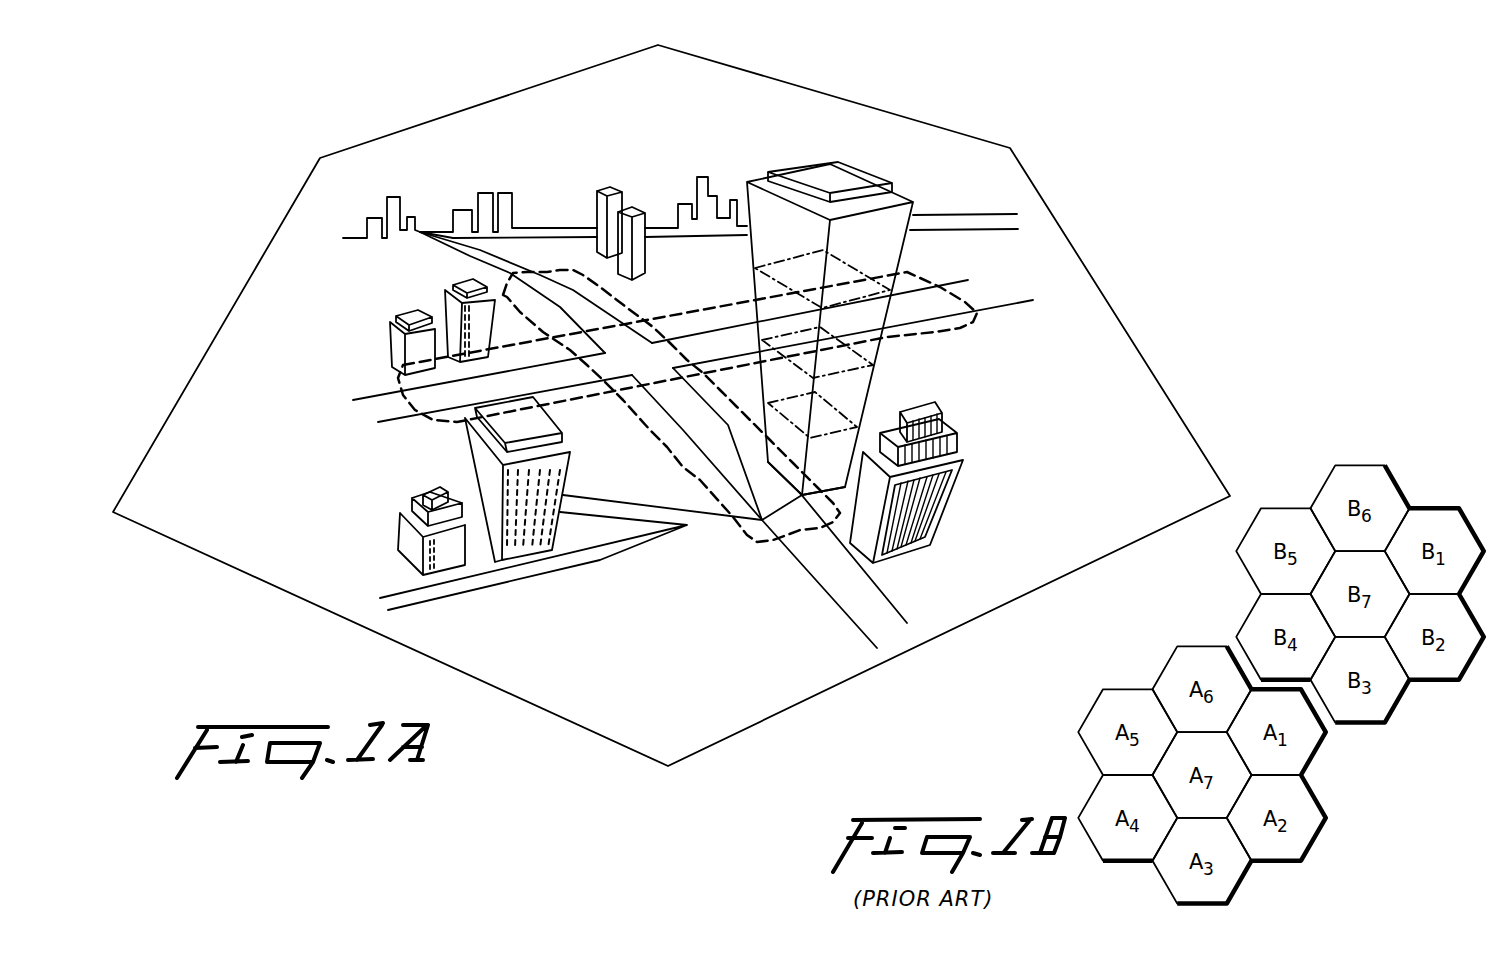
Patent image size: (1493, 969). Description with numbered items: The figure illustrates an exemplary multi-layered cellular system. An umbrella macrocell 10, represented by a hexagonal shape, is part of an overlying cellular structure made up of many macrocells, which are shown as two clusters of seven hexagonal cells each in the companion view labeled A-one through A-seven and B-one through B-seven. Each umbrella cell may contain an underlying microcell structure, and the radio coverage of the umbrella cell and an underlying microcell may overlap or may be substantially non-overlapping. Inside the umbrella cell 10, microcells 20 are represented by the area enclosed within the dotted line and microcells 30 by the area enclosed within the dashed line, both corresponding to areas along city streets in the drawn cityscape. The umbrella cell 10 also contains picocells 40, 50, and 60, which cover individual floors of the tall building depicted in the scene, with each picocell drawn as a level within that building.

The umbrella macrocell 10 is at (327, 605).
The microcells 20 is at (557, 265).
The microcells 30 is at (400, 395).
The picocell 40 is at (858, 268).
The picocell 50 is at (873, 357).
The picocell 60 is at (817, 487).